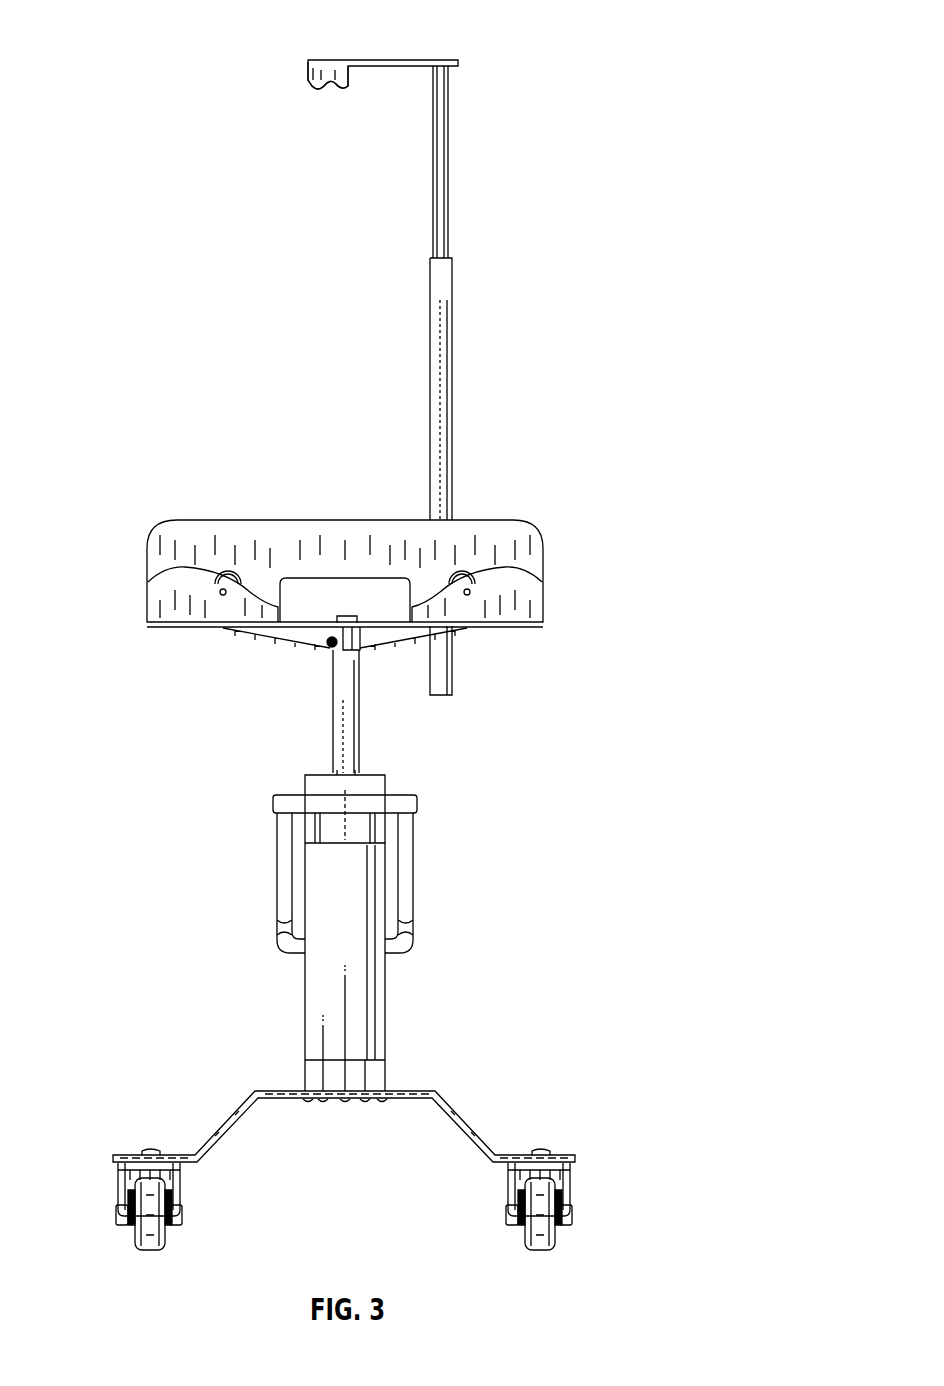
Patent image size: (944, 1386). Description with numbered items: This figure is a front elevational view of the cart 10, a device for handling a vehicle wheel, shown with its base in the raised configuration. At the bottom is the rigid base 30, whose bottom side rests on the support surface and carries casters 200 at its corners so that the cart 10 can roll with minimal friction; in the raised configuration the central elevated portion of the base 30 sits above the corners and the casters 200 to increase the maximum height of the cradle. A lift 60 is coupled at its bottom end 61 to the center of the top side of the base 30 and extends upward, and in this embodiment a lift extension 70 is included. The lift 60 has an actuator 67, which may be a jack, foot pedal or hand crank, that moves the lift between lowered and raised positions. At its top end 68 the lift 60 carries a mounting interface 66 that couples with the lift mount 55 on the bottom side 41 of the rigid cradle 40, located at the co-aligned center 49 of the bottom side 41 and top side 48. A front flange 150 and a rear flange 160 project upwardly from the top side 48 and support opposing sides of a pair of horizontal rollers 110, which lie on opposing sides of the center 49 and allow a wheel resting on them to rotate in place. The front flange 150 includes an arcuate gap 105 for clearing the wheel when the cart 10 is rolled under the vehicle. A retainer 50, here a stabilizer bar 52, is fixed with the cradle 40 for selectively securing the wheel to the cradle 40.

The cart 10 is at (255, 26).
The base 30 is at (555, 1131).
The cradle 40 is at (147, 624).
The bottom side 41 is at (485, 630).
The top side 48 is at (283, 582).
The center 49 is at (349, 615).
The retainer 50 is at (444, 62).
The stabilizer bar 52 is at (328, 75).
The lift mount 55 is at (357, 652).
The lift 60 is at (305, 782).
The bottom end 61 is at (385, 1080).
The mounting interface 66 is at (358, 662).
The actuator 67 is at (278, 888).
The top end 68 is at (328, 646).
The lift extension 70 is at (305, 1075).
The arcuate gap 105 is at (278, 605).
The horizontal rollers 110 is at (228, 575).
The front flange 150 is at (543, 604).
The rear flange 160 is at (165, 538).
The caster 200 is at (145, 1218).